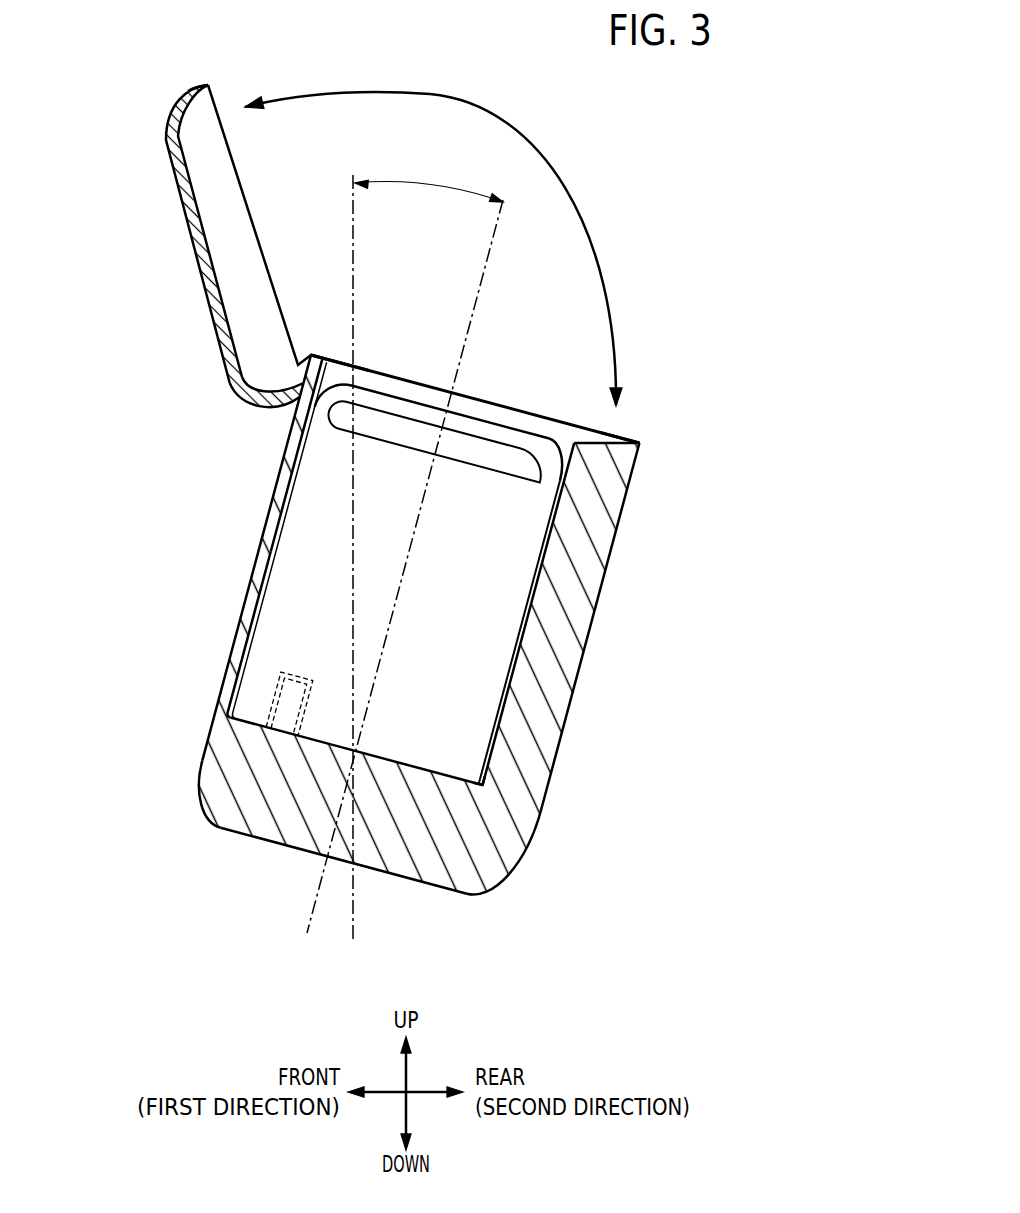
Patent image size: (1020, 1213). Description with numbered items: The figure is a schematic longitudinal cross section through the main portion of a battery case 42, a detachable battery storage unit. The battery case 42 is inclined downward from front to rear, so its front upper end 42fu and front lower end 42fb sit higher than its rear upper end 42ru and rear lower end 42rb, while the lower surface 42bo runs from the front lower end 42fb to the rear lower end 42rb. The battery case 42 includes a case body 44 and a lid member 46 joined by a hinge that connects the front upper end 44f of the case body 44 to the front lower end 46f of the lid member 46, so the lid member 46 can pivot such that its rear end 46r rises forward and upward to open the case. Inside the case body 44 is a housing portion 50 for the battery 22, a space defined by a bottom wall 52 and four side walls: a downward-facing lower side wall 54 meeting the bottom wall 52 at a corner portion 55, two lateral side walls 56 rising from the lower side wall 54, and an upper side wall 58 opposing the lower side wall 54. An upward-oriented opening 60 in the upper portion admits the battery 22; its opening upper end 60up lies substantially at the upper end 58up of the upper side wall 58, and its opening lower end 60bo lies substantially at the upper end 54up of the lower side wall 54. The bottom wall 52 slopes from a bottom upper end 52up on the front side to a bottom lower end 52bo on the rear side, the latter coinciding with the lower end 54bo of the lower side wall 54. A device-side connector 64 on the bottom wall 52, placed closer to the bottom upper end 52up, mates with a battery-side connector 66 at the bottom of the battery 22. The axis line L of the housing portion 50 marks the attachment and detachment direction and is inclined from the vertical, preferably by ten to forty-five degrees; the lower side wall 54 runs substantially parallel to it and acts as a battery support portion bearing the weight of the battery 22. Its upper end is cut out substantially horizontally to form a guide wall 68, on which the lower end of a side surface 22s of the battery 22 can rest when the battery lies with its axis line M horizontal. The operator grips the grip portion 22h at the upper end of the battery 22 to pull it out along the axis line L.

The battery 22 is at (395, 390).
The grip portion 22h is at (510, 437).
The side surface 22s is at (520, 642).
The battery case 42 is at (176, 383).
The rear upper end 42ru is at (170, 117).
The front upper end 42fu is at (266, 398).
The front lower end 42fb is at (207, 818).
The lower surface 42bo is at (392, 877).
The rear lower end 42rb is at (502, 892).
The case body 44 is at (287, 457).
The front upper end 44f is at (327, 371).
The lid member 46 is at (228, 350).
The rear end 46r is at (201, 84).
The front lower end 46f is at (280, 410).
The housing portion 50 is at (280, 532).
The bottom wall 52 is at (410, 763).
The bottom upper end 52up is at (238, 718).
The bottom lower end 52bo is at (576, 803).
The lower side wall 54 is at (550, 587).
The upper end 54up is at (690, 425).
The lower end 54bo is at (481, 783).
The corner portion 55 is at (479, 781).
The lateral side wall 56 is at (438, 389).
The upper side wall 58 is at (263, 557).
The upper end 58up is at (216, 313).
The opening 60 is at (498, 402).
The opening upper end 60up is at (336, 361).
The opening lower end 60bo is at (637, 442).
The device-side connector 64 is at (300, 692).
The battery-side connector 66 is at (283, 690).
The guide wall 68 is at (587, 440).
The axis line L is at (435, 566).
The axis line M is at (485, 259).